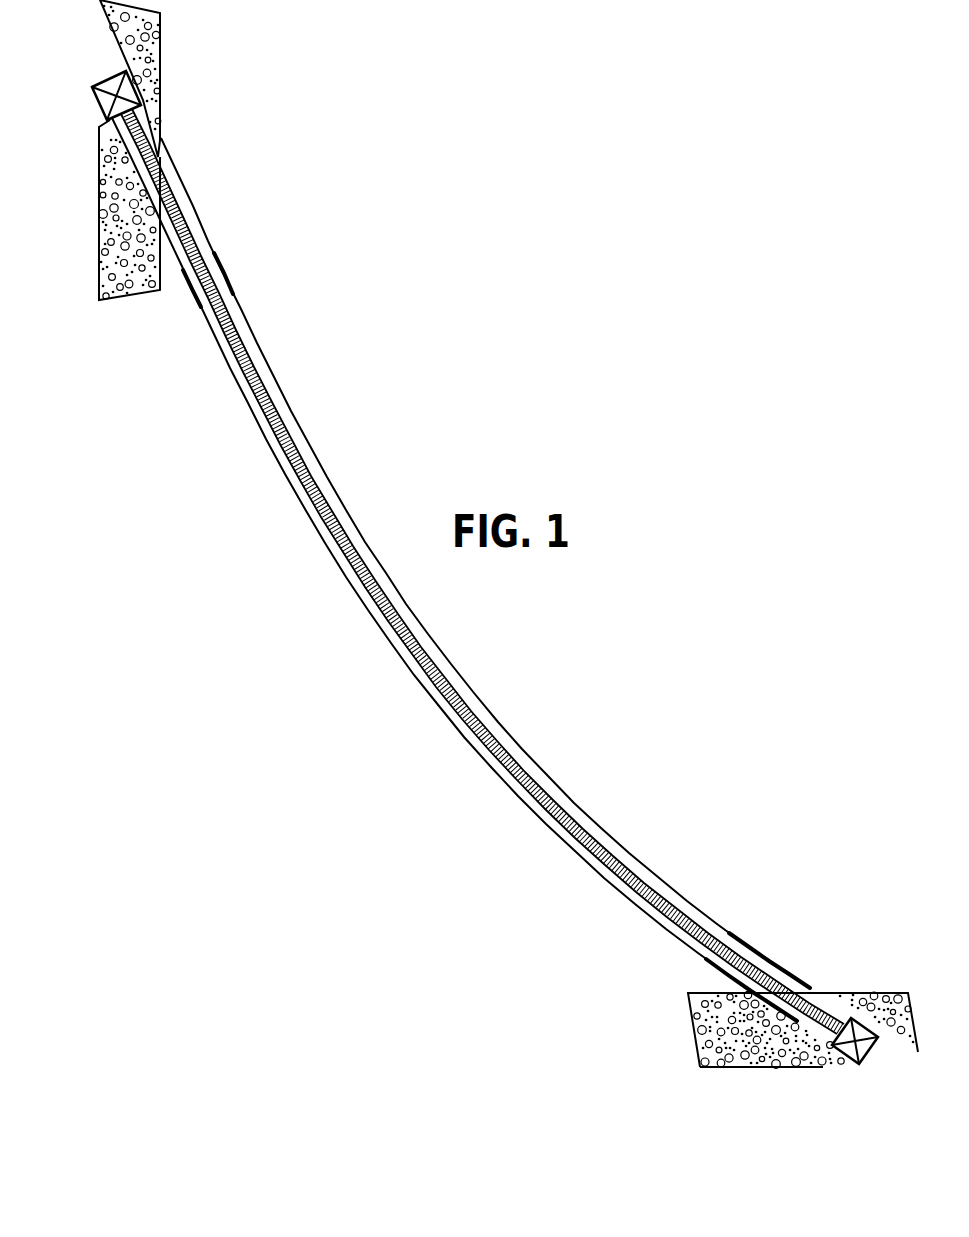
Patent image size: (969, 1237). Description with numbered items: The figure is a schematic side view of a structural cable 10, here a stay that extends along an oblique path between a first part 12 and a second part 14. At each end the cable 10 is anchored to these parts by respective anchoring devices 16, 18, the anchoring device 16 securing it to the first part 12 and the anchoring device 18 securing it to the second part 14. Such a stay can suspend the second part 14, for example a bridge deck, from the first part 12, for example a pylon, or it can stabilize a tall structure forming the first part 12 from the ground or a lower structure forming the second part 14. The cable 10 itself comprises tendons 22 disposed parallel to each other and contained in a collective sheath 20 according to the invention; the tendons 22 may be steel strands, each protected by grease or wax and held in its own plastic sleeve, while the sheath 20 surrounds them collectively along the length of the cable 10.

The structural cable 10 is at (330, 664).
The first part 12 is at (127, 283).
The second part 14 is at (737, 1043).
The anchoring device 16 is at (108, 90).
The anchoring device 18 is at (850, 1052).
The sheath 20 is at (273, 375).
The tendons 22 is at (522, 768).